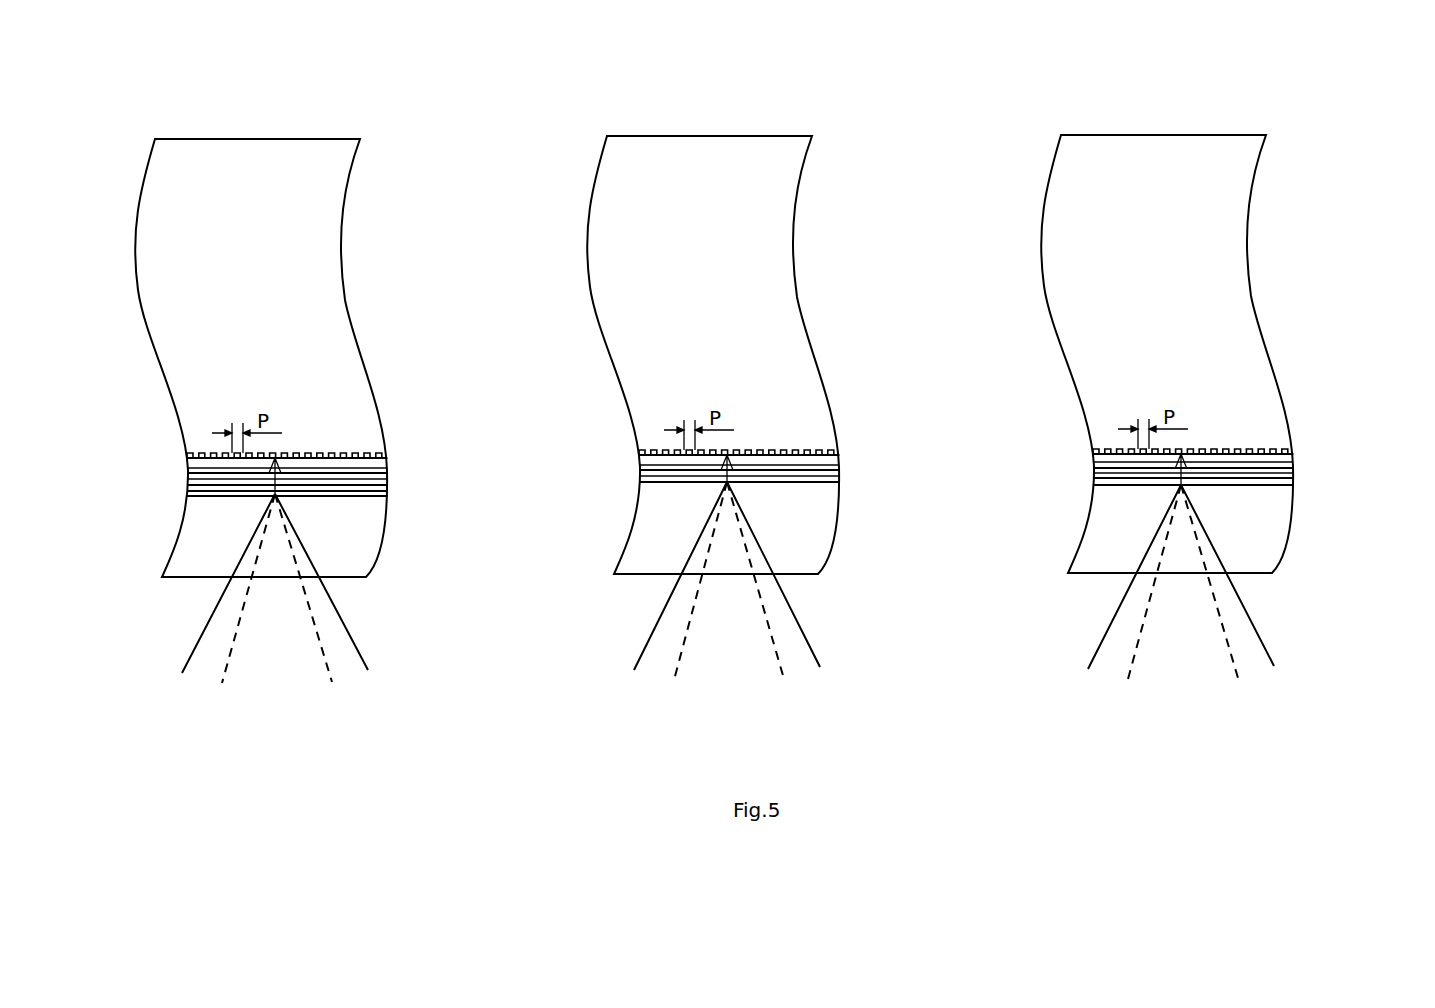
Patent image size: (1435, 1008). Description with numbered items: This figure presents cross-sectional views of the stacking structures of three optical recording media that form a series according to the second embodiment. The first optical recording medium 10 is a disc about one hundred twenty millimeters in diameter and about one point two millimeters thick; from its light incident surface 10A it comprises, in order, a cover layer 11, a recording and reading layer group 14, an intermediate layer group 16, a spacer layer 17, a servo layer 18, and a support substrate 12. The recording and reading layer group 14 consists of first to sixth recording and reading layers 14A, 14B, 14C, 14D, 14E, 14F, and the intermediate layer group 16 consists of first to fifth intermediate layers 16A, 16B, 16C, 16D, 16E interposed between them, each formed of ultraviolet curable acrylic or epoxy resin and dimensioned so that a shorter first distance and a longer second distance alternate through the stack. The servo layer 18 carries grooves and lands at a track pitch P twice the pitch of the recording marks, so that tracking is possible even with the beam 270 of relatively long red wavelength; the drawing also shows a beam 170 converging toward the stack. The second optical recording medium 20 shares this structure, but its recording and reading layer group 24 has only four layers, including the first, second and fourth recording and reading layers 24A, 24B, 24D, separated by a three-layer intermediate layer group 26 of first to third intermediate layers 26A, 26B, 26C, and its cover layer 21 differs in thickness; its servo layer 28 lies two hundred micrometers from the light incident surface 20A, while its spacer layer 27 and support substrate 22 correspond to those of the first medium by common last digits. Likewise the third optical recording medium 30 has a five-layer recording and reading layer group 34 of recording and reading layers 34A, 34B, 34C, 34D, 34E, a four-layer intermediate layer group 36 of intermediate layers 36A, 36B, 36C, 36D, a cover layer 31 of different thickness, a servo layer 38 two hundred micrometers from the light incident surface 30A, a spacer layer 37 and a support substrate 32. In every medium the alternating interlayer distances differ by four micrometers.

The optical recording medium 10 is at (247, 133).
The support substrate 12 is at (305, 247).
The cover layer 11 is at (347, 553).
The light incident surface 10A is at (330, 578).
The recording and reading layer group 14 is at (344, 478).
The first recording and reading layer 14A is at (324, 513).
The second recording and reading layer 14B is at (387, 488).
The third recording and reading layer 14C is at (387, 480).
The fourth recording and reading layer 14D is at (387, 472).
The fifth recording and reading layer 14E is at (387, 465).
The sixth recording and reading layer 14F is at (387, 456).
The intermediate layer group 16 is at (128, 485).
The first intermediate layer 16A is at (147, 514).
The second intermediate layer 16B is at (187, 485).
The third intermediate layer 16C is at (187, 477).
The fourth intermediate layer 16D is at (187, 469).
The fifth intermediate layer 16E is at (187, 460).
The spacer layer 17 is at (188, 458).
The servo layer 18 is at (336, 453).
The second optical recording medium 20 is at (713, 319).
The substrate 22 is at (809, 237).
The cover layer 21 is at (845, 559).
The light incident surface 20A is at (829, 588).
The recording and reading layer group 24 is at (797, 473).
The first recording and reading layer 24A is at (775, 507).
The second recording and reading layer 24B is at (775, 484).
The fourth recording and reading layer 24D is at (776, 440).
The intermediate layer group 26 is at (576, 473).
The first intermediate layer 26A is at (608, 499).
The second intermediate layer 26B is at (608, 473).
The third intermediate layer 26C is at (608, 445).
The left end of multilayer structure 27 is at (609, 425).
The servo layer 28 is at (828, 421).
The third optical recording medium 30 is at (1167, 318).
The substrate 32 is at (1263, 236).
The cover layer 31 is at (1299, 556).
The light incident surface 30A is at (1283, 586).
The recording and reading layer group 34 is at (1251, 470).
The first recording and reading layer 34A is at (1230, 504).
The second recording and reading layer 34B is at (1230, 489).
The third recording and reading layer 34C is at (1230, 468).
The fourth recording and reading layer 34D is at (1231, 446).
The fifth recording and reading layer 34E is at (1229, 430).
The intermediate layer group 36 is at (1028, 480).
The first intermediate layer 36A is at (1062, 506).
The second intermediate layer 36B is at (1062, 489).
The third intermediate layer 36C is at (1062, 468).
The fourth intermediate layer 36D is at (1062, 444).
The left end of multilayer structure 37 is at (1063, 423).
The servo layer 38 is at (1283, 419).
The incident light beam 170 is at (368, 664).
The beam 270 is at (307, 603).